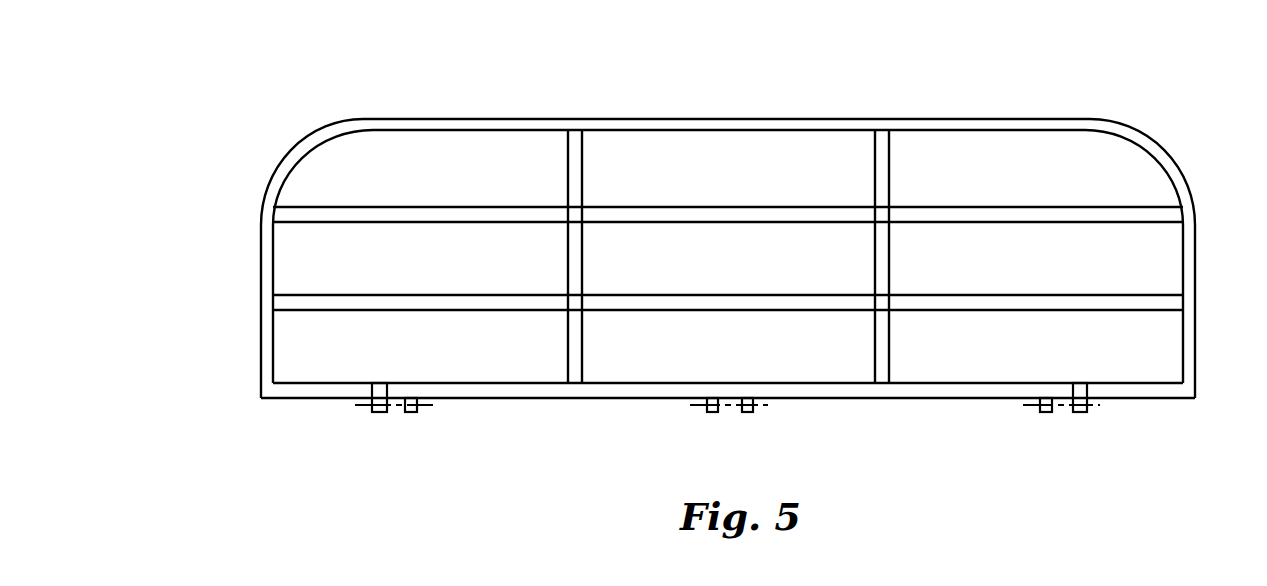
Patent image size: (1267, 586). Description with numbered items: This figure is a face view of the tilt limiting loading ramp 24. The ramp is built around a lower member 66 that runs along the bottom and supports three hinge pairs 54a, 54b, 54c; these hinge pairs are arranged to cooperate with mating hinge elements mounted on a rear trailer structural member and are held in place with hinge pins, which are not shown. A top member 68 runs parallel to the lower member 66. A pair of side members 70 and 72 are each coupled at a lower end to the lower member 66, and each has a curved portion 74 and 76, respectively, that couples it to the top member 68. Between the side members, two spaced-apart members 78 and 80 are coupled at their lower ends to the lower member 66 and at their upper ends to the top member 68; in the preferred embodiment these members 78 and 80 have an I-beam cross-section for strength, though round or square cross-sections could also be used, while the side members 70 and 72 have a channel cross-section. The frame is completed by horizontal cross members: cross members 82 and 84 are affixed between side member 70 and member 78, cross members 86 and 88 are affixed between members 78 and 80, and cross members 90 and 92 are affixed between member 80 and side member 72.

The loading ramp 24 is at (731, 248).
The hinge pair 54a is at (377, 412).
The hinge pair 54b is at (712, 412).
The hinge pair 54c is at (1046, 412).
The lower member 66 is at (303, 398).
The top member 68 is at (613, 119).
The side member 70 is at (258, 277).
The side member 72 is at (1195, 252).
The curved portion 74 is at (297, 150).
The curved portion 76 is at (1147, 133).
The member 78 is at (568, 235).
The member 80 is at (875, 235).
The cross member 82 is at (325, 310).
The cross member 84 is at (312, 222).
The cross member 86 is at (747, 310).
The cross member 88 is at (730, 226).
The cross member 90 is at (1042, 310).
The cross member 92 is at (1023, 224).